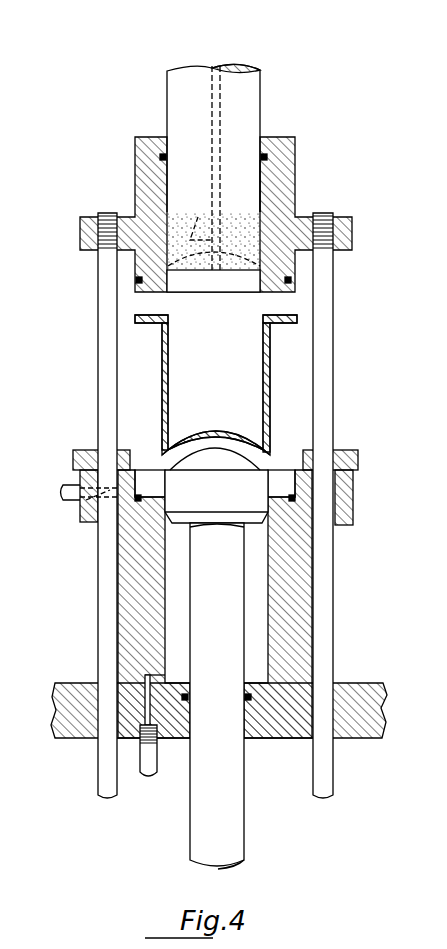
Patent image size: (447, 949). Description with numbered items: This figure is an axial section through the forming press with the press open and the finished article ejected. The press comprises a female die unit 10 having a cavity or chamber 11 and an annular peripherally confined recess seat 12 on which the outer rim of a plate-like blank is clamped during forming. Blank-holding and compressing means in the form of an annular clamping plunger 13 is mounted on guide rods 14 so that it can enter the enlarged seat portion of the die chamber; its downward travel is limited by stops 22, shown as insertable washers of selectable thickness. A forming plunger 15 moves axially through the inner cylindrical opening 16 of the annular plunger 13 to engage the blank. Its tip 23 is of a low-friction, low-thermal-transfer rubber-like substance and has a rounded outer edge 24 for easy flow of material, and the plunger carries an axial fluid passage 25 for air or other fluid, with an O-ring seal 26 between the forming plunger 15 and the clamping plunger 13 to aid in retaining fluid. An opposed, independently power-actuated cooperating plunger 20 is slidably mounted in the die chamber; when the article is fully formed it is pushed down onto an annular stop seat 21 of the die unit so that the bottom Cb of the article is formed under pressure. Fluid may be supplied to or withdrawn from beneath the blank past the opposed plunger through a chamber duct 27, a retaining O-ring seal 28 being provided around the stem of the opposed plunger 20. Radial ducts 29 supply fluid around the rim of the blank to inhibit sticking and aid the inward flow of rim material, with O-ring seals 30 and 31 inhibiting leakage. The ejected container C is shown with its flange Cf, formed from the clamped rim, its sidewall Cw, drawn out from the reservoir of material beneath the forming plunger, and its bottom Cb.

The female die unit 10 is at (291, 583).
The cavity or chamber 11 is at (271, 608).
The recess seat 12 is at (140, 495).
The annular plunger 13 is at (280, 278).
The guide rods 14 is at (334, 315).
The forming plunger 15 is at (256, 106).
The inner cylindrical opening 16 is at (256, 178).
The cooperating plunger 20 is at (182, 500).
The annular stop seat 21 is at (255, 684).
The stops 22 is at (73, 458).
The tip 23 is at (193, 266).
The rounded outer edge 24 is at (168, 268).
The axial fluid passage 25 is at (212, 70).
The O-ring seal 26 is at (160, 156).
The chamber duct 27 is at (147, 713).
The O-ring seal 28 is at (250, 700).
The radial ducts 29 is at (75, 505).
The O-ring seal 30 is at (295, 498).
The O-ring seal 31 is at (292, 280).
The container C is at (273, 398).
The article flange Cf is at (277, 325).
The sidewall Cw is at (271, 381).
The bottom Cb is at (240, 441).